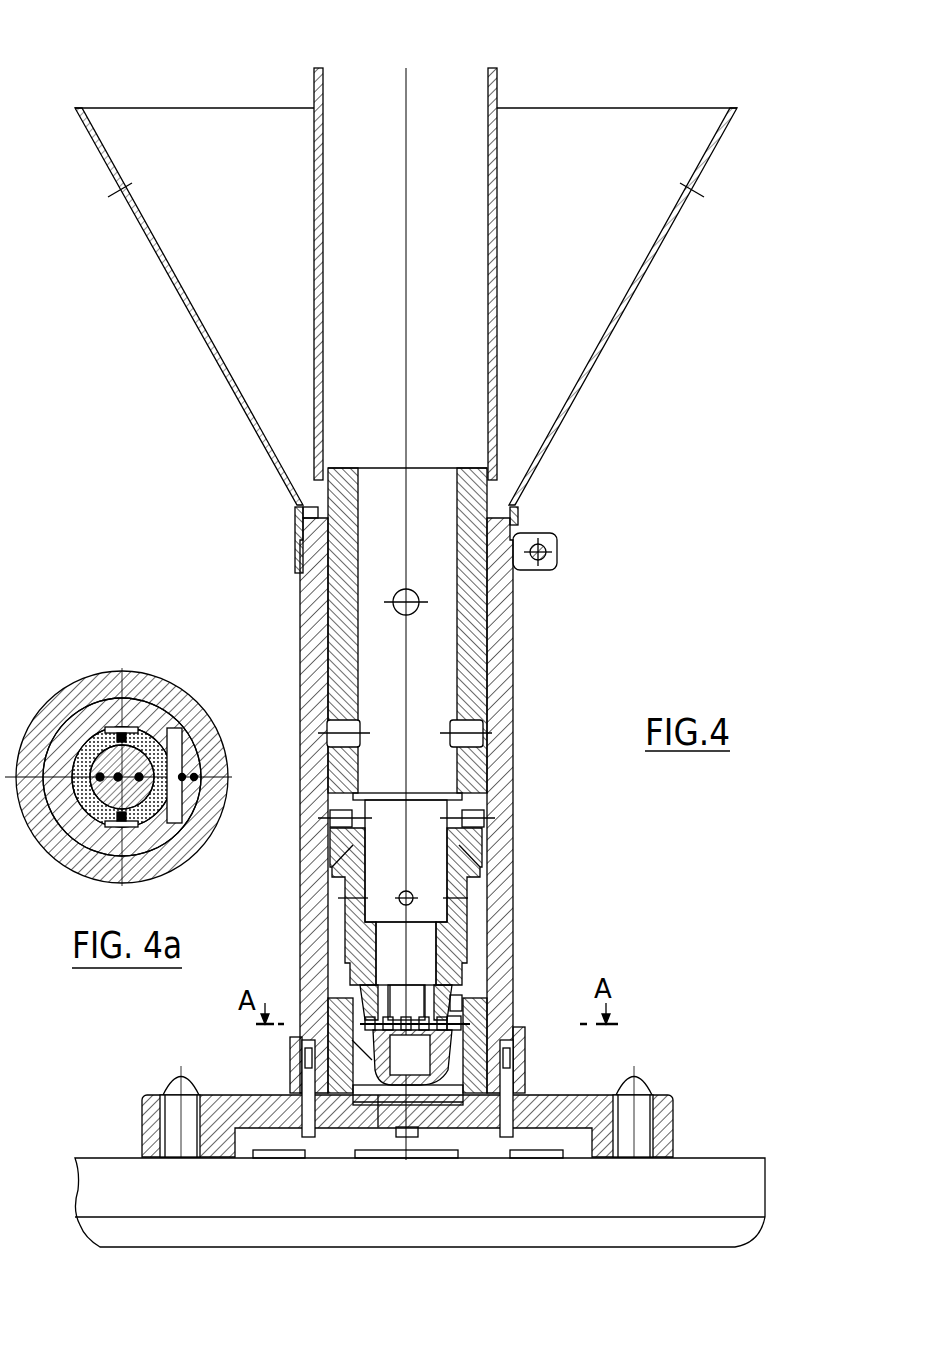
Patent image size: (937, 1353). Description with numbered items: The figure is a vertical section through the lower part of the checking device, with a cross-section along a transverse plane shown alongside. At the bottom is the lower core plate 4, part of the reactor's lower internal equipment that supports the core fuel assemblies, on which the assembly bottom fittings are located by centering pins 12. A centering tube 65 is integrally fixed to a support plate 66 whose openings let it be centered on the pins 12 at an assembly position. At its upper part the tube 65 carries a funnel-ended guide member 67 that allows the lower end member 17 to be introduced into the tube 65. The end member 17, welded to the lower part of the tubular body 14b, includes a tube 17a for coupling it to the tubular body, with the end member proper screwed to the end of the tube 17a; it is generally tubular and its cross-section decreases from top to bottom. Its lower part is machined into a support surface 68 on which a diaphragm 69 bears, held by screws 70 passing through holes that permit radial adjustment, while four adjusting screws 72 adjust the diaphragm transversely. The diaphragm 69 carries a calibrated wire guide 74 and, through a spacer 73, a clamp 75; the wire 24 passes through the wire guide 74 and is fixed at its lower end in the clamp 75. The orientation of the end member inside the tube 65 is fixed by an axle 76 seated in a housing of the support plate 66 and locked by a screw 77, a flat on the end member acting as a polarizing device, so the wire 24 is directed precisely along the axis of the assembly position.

In FIG. 4, the lower core plate 4 is at (95, 1160).
In FIG. 4, the centering pins 12 is at (176, 1092).
In FIG. 4, the tubular body 14b is at (318, 435).
In FIG. 4, the lower end member 17 is at (345, 933).
In FIG. 4a, the lower end member 17 is at (150, 740).
In FIG. 4, the tube 17a is at (342, 677).
In FIG. 4, the wire 24 is at (408, 938).
In FIG. 4, the centering tube 65 is at (313, 612).
In FIG. 4, the support plate 66 is at (222, 1093).
In FIG. 4a, the support plate 66 is at (210, 728).
In FIG. 4, the funnel-ended guide member 67 is at (278, 470).
In FIG. 4, the support surface 68 is at (355, 990).
In FIG. 4, the diaphragm 69 is at (475, 997).
In FIG. 4a, the diaphragm 69 is at (178, 762).
In FIG. 4, the screws 70 is at (500, 1033).
In FIG. 4a, the screws 70 is at (150, 825).
In FIG. 4a, the adjusting screws 72 is at (118, 735).
In FIG. 4, the spacer 73 is at (352, 1040).
In FIG. 4, the calibrated wire guide 74 is at (307, 1050).
In FIG. 4, the clamp 75 is at (378, 1095).
In FIG. 4, the axle 76 is at (492, 1020).
In FIG. 4a, the axle 76 is at (182, 722).
In FIG. 4, the screw 77 is at (490, 1005).
In FIG. 4a, the screw 77 is at (202, 775).